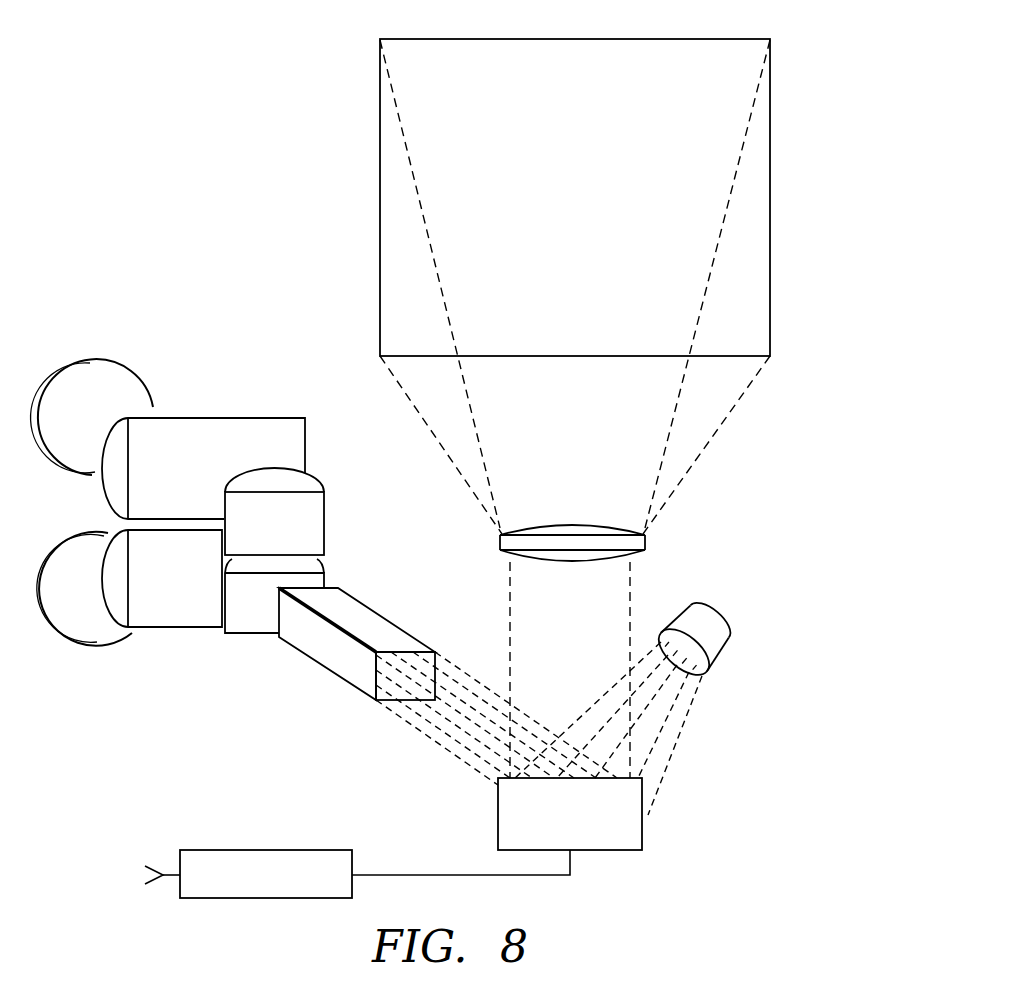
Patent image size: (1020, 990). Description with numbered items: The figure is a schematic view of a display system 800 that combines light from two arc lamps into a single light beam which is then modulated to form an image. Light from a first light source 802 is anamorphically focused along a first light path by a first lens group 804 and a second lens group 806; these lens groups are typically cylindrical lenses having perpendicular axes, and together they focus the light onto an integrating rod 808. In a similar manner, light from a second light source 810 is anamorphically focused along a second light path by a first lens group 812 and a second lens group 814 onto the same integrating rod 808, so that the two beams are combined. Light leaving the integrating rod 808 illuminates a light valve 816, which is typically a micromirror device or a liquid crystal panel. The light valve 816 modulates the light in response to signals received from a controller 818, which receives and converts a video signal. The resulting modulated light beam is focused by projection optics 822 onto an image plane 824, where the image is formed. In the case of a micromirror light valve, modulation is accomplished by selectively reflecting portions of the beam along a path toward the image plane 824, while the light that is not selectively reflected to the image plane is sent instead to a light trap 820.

The display system 800 is at (826, 103).
The first light source 802 is at (78, 362).
The first lens group 804 is at (212, 418).
The second lens group 806 is at (313, 487).
The integrating rod 808 is at (365, 612).
The second light source 810 is at (93, 647).
The first lens group 812 is at (168, 630).
The second lens group 814 is at (255, 635).
The light valve 816 is at (594, 827).
The controller 818 is at (265, 900).
The light trap 820 is at (702, 620).
The projection optics 822 is at (500, 540).
The image plane 824 is at (379, 218).